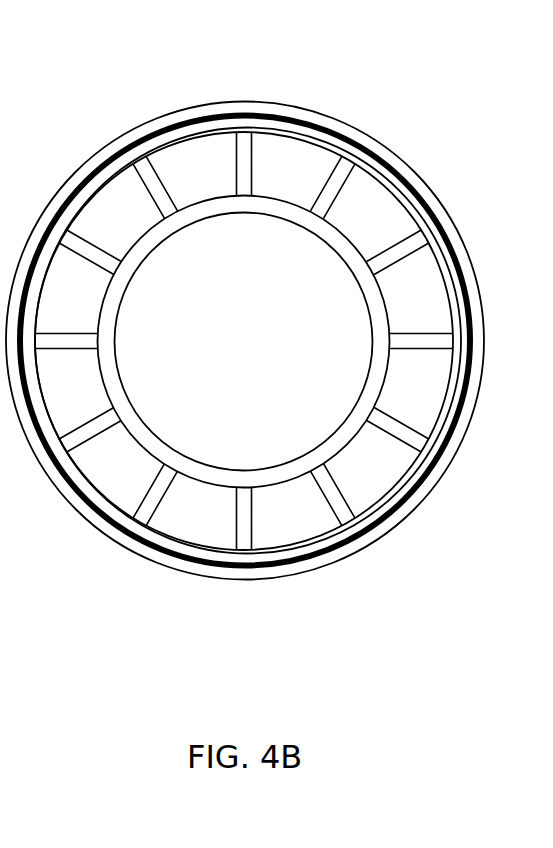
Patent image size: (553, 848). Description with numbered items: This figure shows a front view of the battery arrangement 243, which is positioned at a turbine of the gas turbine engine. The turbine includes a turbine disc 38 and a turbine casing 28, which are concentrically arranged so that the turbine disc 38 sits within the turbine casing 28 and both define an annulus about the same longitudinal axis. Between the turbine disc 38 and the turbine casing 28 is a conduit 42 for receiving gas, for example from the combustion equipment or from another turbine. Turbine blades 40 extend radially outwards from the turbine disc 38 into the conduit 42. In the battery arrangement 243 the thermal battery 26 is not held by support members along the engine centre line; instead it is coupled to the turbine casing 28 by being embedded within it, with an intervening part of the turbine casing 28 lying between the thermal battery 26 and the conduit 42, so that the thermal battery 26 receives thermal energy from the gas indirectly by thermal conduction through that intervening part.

The battery arrangement 243 is at (421, 83).
The thermal battery 26 is at (443, 207).
The turbine casing 28 is at (403, 162).
The conduit 42 is at (211, 184).
The turbine disc 38 is at (122, 290).
The turbine blades 40 is at (317, 210).